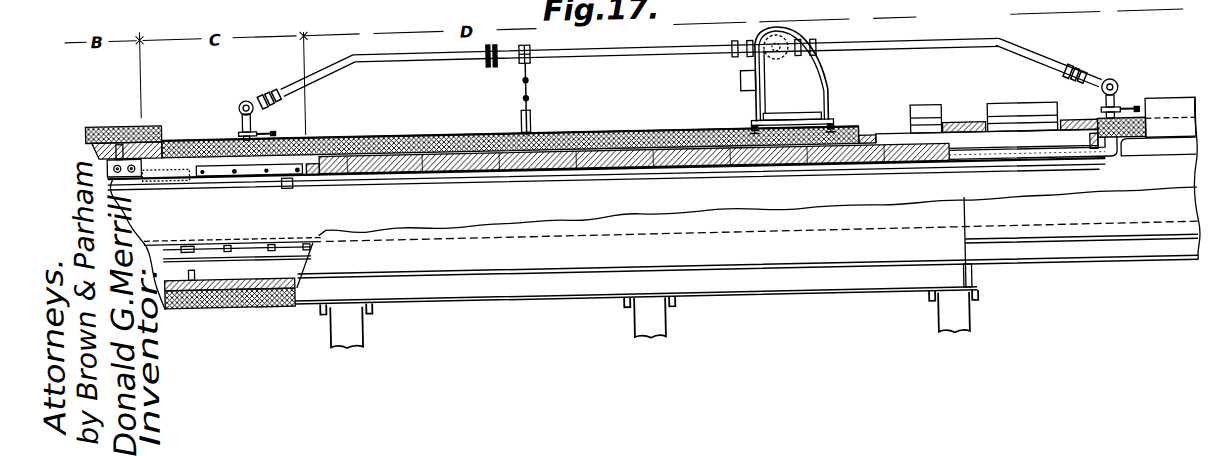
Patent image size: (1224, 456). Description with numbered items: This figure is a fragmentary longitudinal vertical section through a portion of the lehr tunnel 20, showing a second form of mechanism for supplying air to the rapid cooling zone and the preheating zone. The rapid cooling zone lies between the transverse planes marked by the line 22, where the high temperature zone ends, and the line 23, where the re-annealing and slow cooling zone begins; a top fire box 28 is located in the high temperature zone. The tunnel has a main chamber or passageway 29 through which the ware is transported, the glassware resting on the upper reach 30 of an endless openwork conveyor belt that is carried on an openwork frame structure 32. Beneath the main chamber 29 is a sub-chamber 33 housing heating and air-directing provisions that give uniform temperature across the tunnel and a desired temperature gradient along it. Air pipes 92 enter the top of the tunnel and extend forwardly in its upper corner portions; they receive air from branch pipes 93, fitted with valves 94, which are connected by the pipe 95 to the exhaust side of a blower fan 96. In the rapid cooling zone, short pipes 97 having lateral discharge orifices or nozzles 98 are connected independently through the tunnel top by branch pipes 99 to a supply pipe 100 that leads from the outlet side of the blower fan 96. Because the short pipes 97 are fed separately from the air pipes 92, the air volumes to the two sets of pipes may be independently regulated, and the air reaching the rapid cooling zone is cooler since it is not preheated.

The lehr tunnel 20 is at (628, 134).
The line 22 is at (144, 100).
The line 23 is at (308, 117).
The top fire box 28 is at (98, 122).
The main chamber or passageway 29 is at (430, 196).
The upper reach of conveyor belt 30 is at (294, 240).
The openwork frame structure 32 is at (189, 235).
The sub-chamber 33 is at (250, 277).
The air pipes 92 is at (908, 178).
The branch pipes 93 is at (1121, 99).
The valves 94 is at (1127, 122).
The pipe 95 is at (907, 52).
The blower fan 96 is at (813, 85).
The short pipes 97 is at (246, 175).
The lateral discharge orifices or nozzles 98 is at (234, 172).
The branch pipes 99 is at (244, 123).
The supply pipe 100 is at (429, 63).